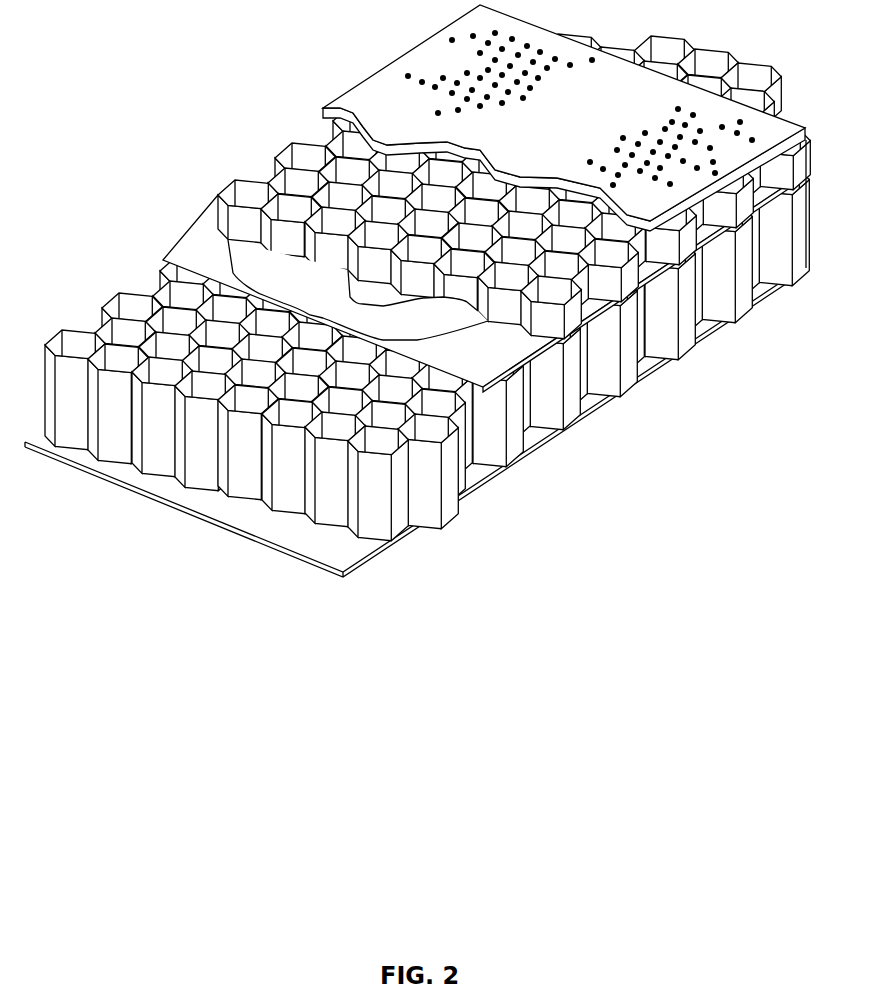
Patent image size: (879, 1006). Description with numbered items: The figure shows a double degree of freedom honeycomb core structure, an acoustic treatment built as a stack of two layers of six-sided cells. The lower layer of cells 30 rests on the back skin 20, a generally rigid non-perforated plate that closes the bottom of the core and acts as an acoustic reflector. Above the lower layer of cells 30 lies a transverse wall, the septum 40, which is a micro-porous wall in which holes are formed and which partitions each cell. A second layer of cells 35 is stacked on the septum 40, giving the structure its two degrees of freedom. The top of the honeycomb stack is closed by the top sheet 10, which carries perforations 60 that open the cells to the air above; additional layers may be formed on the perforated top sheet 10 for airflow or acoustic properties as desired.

The top sheet 10 is at (635, 92).
The back skin 20 is at (318, 545).
The cells 30 is at (410, 507).
The cells 35 is at (613, 275).
The septum 40 is at (190, 252).
The perforations 60 is at (707, 122).